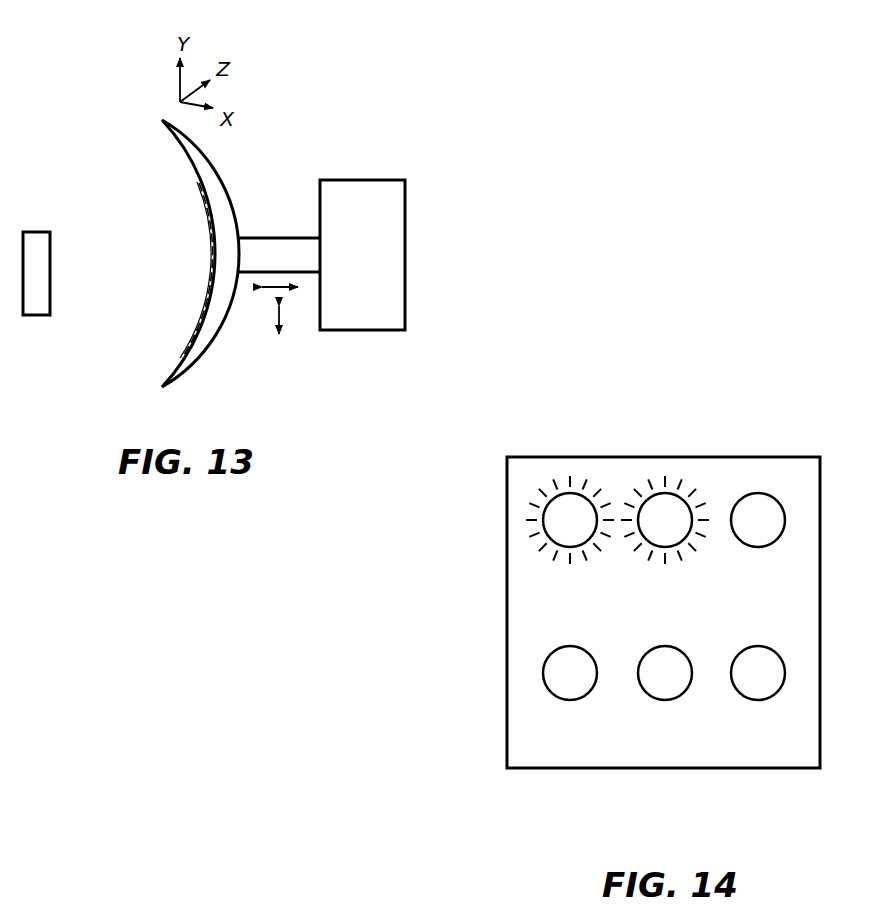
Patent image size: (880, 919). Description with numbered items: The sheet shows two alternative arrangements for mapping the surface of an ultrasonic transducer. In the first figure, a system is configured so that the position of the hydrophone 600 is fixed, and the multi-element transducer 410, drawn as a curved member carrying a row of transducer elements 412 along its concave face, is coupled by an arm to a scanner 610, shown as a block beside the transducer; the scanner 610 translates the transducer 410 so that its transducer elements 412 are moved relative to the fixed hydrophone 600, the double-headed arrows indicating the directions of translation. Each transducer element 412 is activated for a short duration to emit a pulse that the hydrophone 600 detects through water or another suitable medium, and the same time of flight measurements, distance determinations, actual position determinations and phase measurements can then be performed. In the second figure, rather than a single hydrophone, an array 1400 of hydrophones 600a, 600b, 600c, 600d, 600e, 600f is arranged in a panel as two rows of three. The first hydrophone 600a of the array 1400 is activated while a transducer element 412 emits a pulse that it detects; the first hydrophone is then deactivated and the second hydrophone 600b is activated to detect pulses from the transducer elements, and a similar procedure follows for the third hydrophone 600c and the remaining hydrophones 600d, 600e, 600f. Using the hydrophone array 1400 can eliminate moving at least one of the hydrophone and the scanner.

In FIG. 13, the multi-element transducer 410 is at (213, 342).
In FIG. 13, the transducer element 412 is at (190, 340).
In FIG. 13, the hydrophone 600 is at (50, 283).
In FIG. 13, the scanner 610 is at (367, 180).
In FIG. 14, the hydrophone array 1400 is at (458, 610).
In FIG. 14, the first hydrophone 600a is at (583, 490).
In FIG. 14, the second hydrophone 600b is at (677, 490).
In FIG. 14, the third hydrophone 600c is at (768, 492).
In FIG. 14, the hydrophone 600d is at (590, 692).
In FIG. 14, the hydrophone 600e is at (683, 692).
In FIG. 14, the hydrophone 600f is at (777, 692).